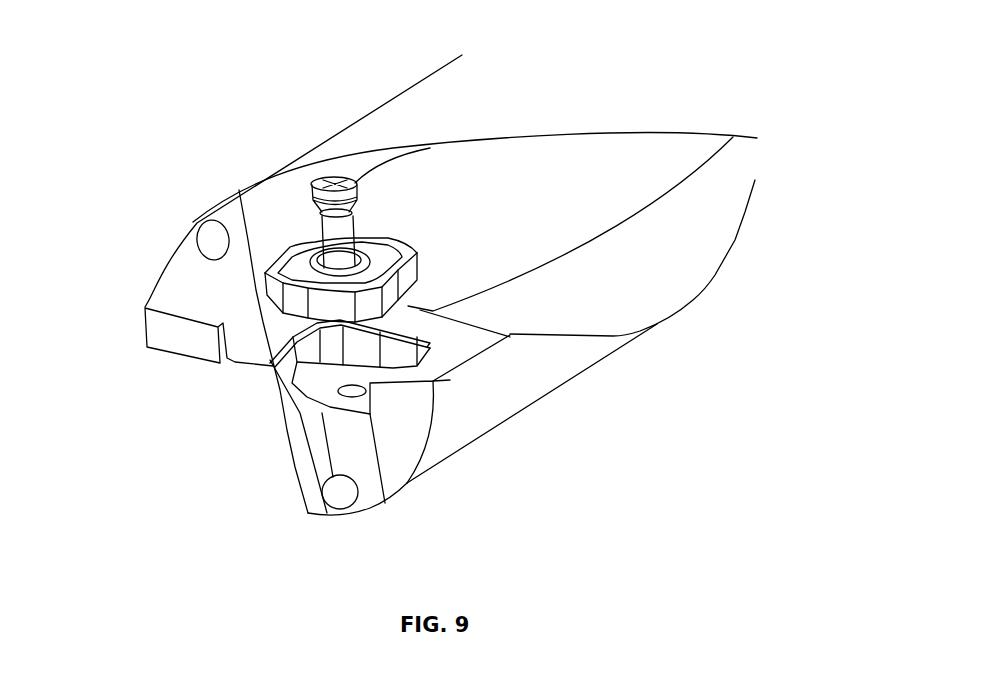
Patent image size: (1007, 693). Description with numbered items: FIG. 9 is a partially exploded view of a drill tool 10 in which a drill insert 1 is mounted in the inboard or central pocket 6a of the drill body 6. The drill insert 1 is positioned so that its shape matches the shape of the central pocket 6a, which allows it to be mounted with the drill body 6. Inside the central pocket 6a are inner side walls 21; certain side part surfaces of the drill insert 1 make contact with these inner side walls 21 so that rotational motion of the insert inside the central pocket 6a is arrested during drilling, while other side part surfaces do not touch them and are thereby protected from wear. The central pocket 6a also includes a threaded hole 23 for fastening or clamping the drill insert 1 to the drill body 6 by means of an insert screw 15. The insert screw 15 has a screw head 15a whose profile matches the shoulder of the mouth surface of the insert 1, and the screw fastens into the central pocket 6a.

The drill tool 10 is at (210, 99).
The drill insert 1 is at (266, 295).
The drill body 6 is at (478, 83).
The central pocket 6a is at (328, 407).
The threaded hole 23 is at (354, 404).
The inner side walls 21 is at (298, 360).
The insert screw 15 is at (315, 232).
The screw head 15a is at (330, 184).